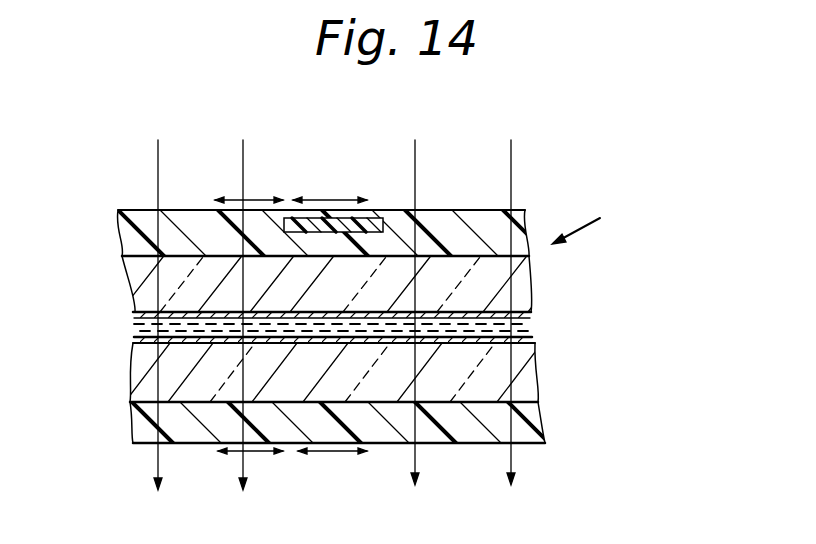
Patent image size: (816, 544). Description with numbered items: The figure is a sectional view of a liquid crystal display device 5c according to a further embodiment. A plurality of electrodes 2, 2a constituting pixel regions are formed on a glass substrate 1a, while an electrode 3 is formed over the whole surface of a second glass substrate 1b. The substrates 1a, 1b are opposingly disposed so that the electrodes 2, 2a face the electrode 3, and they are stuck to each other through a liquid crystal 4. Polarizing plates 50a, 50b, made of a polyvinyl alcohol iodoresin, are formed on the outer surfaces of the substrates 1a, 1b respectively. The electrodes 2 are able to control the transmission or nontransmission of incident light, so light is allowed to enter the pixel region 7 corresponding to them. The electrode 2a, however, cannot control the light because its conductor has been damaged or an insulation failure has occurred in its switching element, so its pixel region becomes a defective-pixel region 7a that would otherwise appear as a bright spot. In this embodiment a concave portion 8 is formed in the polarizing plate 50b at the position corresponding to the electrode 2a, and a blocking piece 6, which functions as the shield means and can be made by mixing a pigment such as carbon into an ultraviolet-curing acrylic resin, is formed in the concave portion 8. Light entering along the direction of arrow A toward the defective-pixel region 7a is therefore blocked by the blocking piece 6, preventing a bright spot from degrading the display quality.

The direction of incident light A is at (511, 167).
The polarizing plate 50b is at (540, 205).
The polarizing plate 50a is at (537, 422).
The substrate 1b is at (124, 268).
The substrate 1a is at (137, 389).
The electrode 2 is at (165, 344).
The electrode 2a is at (320, 345).
The electrode 3 is at (527, 314).
The liquid crystal 4 is at (140, 332).
The liquid crystal display device 5c is at (601, 223).
The blocking piece 6 is at (368, 227).
The pixel region 7 is at (233, 198).
The defective-pixel region 7a is at (313, 199).
The concave portion 8 is at (381, 232).